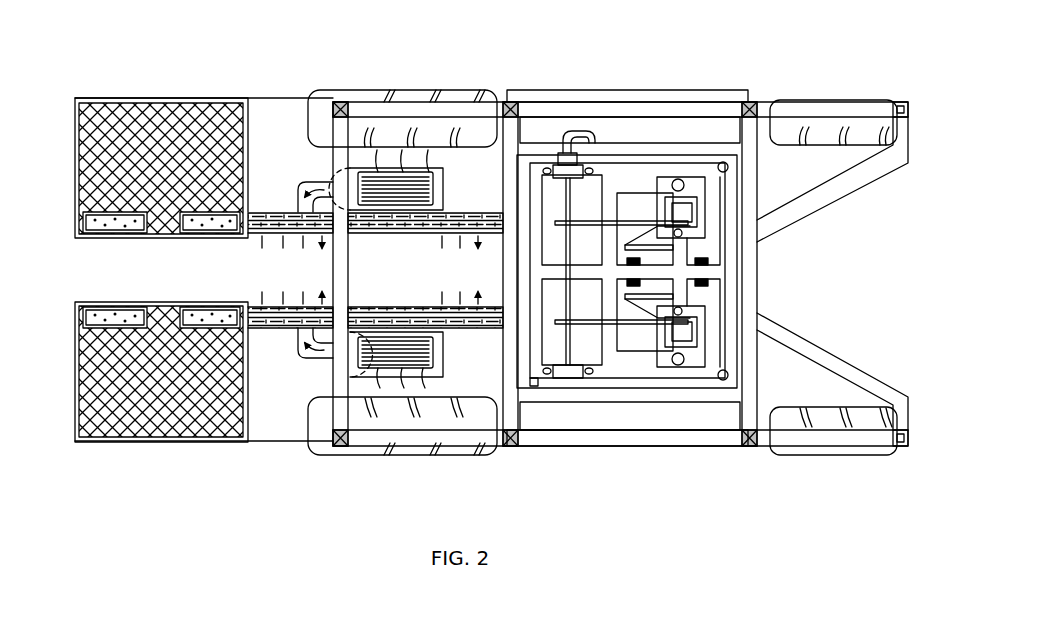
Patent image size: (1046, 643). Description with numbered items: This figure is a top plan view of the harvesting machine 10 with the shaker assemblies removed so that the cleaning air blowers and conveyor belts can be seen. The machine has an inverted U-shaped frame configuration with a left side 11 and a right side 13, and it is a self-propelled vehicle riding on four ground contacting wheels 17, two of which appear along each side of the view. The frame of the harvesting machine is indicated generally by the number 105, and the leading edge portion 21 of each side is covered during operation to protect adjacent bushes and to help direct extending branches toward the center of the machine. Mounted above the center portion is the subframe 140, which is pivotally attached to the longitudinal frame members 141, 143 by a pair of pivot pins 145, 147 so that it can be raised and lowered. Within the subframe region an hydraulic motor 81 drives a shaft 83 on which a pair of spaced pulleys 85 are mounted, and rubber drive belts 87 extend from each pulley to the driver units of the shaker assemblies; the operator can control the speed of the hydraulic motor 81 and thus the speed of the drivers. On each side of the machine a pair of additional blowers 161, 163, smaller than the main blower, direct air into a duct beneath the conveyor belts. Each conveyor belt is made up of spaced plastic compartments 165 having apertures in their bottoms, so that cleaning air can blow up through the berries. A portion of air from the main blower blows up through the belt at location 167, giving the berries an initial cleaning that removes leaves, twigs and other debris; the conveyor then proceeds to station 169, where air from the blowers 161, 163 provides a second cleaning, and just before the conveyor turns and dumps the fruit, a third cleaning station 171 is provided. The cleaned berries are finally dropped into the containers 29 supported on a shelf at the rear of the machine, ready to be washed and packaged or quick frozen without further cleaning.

The harvesting machine 10 is at (567, 84).
The left side 11 is at (607, 447).
The right side 13 is at (712, 98).
The ground contacting wheels 17 is at (368, 91).
The leading edge portion 21 is at (900, 133).
The containers 29 is at (123, 302).
The hydraulic motor 81 is at (572, 176).
The shaft 83 is at (572, 273).
The pulleys 85 is at (583, 226).
The rubber drive belts 87 is at (650, 219).
The frame 105 is at (815, 352).
The subframe 140 is at (722, 272).
The longitudinal frame member 141 is at (636, 392).
The longitudinal frame member 143 is at (608, 148).
The pivot pin 145 is at (540, 160).
The pivot pin 147 is at (537, 388).
The blower 161 is at (436, 197).
The blower 163 is at (436, 355).
The plastic compartments 165 is at (388, 231).
The location 167 is at (478, 238).
The station 169 is at (313, 238).
The third cleaning station 171 is at (255, 302).